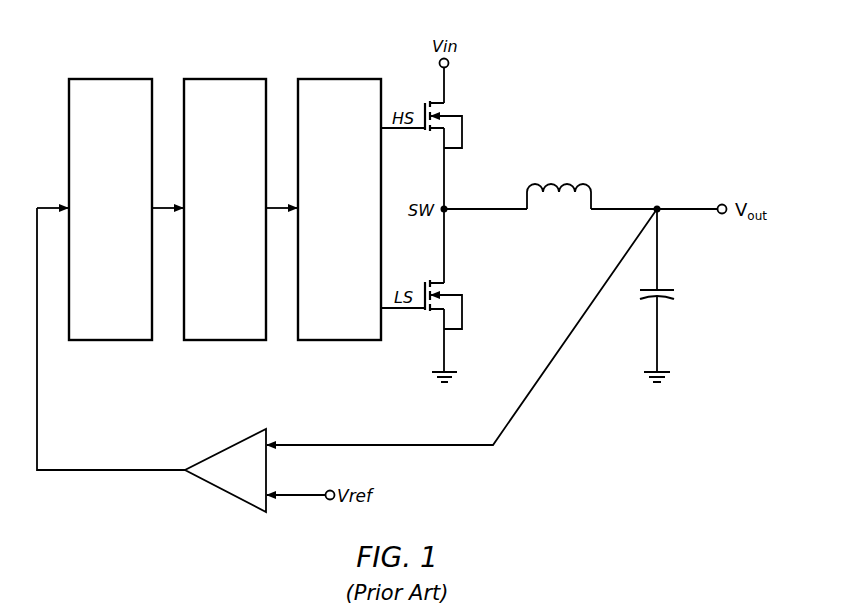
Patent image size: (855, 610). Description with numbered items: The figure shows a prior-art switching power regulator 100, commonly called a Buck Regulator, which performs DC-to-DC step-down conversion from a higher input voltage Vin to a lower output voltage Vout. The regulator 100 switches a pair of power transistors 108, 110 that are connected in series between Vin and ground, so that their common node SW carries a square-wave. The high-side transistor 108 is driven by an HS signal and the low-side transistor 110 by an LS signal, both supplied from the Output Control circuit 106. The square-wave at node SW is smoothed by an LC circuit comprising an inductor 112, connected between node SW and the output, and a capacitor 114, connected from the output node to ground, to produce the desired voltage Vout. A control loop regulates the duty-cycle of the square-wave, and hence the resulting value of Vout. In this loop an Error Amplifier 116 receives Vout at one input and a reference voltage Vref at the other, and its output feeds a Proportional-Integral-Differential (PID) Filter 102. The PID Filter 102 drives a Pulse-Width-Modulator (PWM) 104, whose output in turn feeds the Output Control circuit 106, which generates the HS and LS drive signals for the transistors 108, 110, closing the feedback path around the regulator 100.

The power regulator 100 is at (616, 66).
The Proportional-Integral-Differential (PID) Filter 102 is at (110, 209).
The Pulse-Width-Modulator (PWM) 104 is at (225, 209).
The Output Control circuit 106 is at (339, 209).
The power transistor 108 is at (459, 106).
The power transistor 110 is at (459, 285).
The inductor 112 is at (568, 183).
The capacitor 114 is at (664, 302).
The Error Amplifier 116 is at (226, 448).